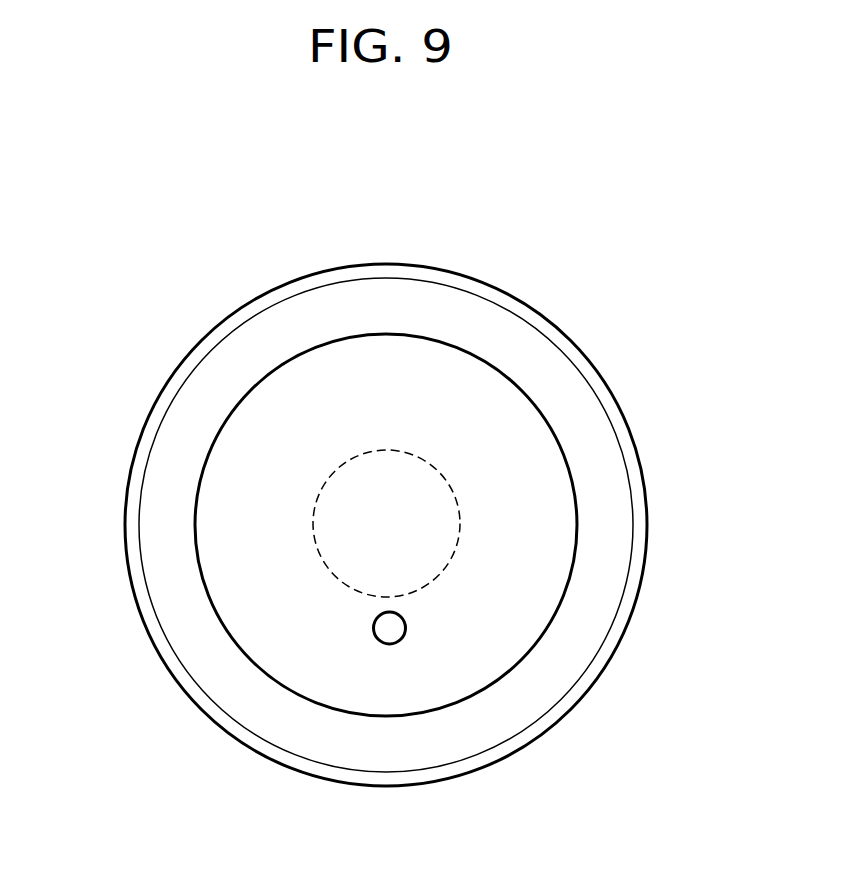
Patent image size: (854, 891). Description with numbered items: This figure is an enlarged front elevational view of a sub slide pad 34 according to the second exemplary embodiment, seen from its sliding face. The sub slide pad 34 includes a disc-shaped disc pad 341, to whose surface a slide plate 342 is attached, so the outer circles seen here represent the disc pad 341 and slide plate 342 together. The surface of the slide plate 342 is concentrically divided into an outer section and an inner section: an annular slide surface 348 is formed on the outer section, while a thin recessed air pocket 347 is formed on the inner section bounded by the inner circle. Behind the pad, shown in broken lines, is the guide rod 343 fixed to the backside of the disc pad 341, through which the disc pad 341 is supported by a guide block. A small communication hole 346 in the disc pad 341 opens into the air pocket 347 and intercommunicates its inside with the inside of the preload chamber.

The sub slide pad 34 is at (400, 521).
The disc pad 341 is at (411, 520).
The slide plate 342 is at (560, 326).
The guide rod 343 is at (333, 478).
The communication hole 346 is at (375, 628).
The air pocket 347 is at (535, 548).
The slide surface 348 is at (596, 450).